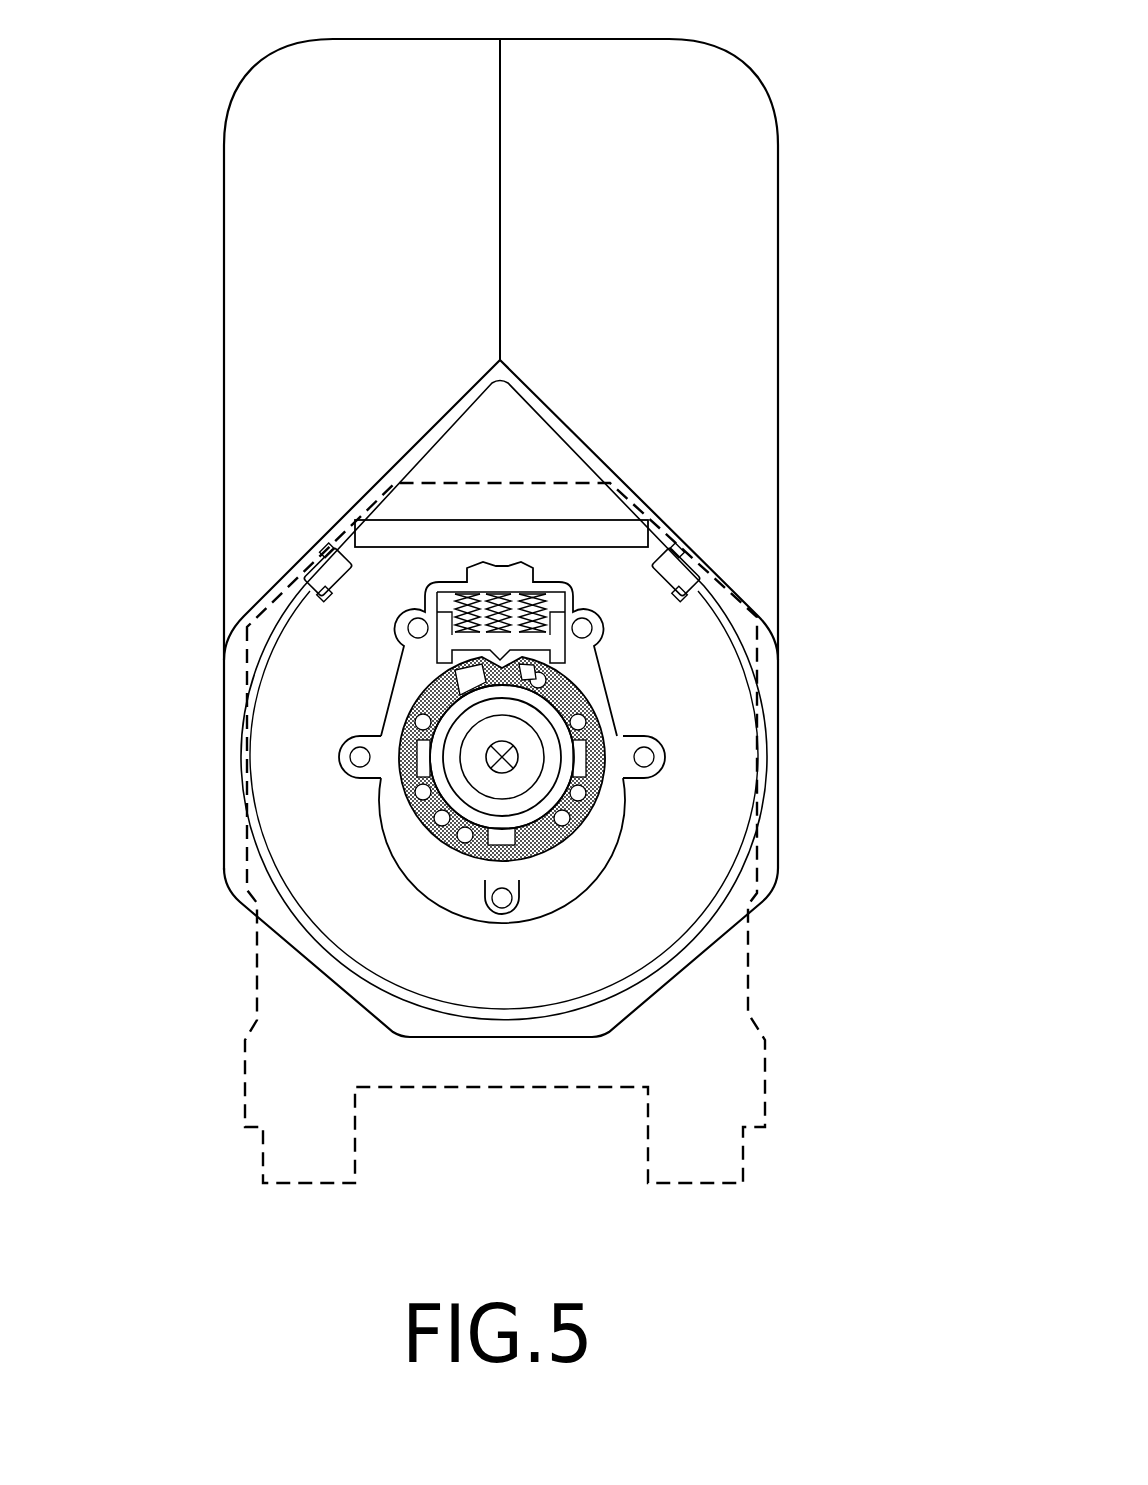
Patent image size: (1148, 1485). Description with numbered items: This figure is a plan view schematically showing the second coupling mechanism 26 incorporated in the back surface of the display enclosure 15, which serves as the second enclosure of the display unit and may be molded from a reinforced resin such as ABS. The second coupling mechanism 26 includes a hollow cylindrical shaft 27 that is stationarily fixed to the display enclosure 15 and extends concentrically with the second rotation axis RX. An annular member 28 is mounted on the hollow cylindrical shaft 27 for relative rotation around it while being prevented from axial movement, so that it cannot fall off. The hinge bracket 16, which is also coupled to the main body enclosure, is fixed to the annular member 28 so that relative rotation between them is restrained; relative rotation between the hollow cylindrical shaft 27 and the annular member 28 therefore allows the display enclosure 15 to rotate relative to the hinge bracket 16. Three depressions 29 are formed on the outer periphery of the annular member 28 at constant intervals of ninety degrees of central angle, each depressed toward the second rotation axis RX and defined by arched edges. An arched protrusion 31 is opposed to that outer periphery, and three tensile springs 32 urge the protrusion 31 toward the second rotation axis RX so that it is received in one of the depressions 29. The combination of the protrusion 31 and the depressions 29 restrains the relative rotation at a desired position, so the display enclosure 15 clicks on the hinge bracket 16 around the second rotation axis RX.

The display enclosure 15 is at (778, 253).
The hinge bracket 16 is at (766, 1060).
The second coupling mechanism 26 is at (328, 905).
The hollow cylindrical shaft 27 is at (557, 792).
The annular member 28 is at (533, 852).
The depressions 29 is at (433, 643).
The arched protrusion 31 is at (560, 683).
The tensile springs 32 is at (463, 592).
The second rotation axis RX is at (487, 762).